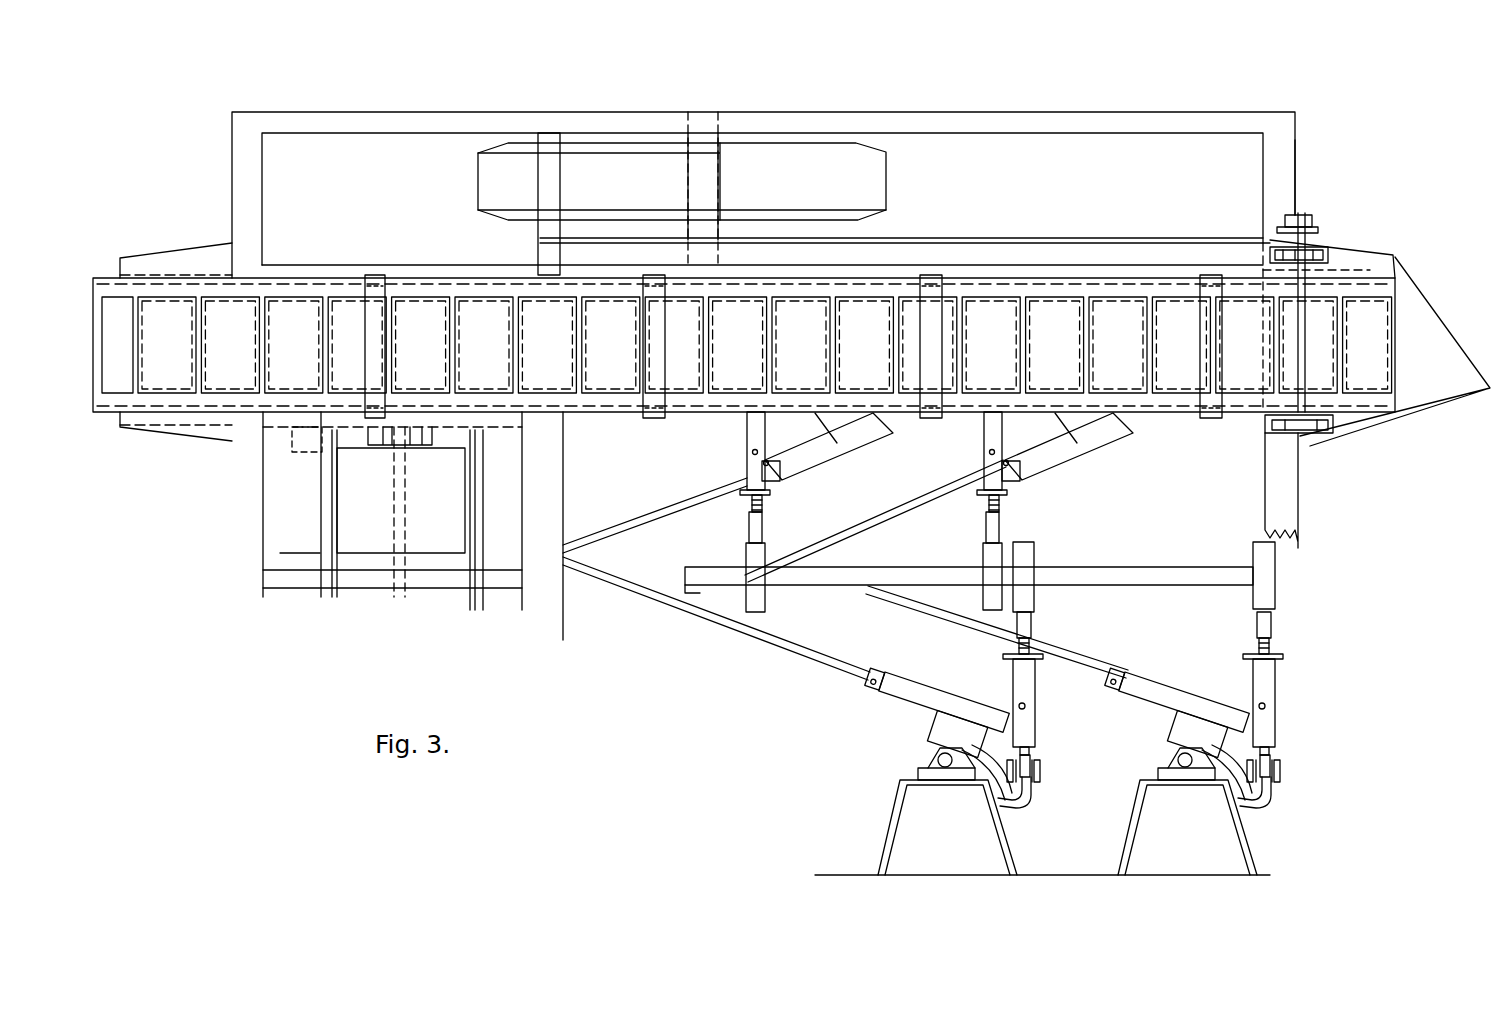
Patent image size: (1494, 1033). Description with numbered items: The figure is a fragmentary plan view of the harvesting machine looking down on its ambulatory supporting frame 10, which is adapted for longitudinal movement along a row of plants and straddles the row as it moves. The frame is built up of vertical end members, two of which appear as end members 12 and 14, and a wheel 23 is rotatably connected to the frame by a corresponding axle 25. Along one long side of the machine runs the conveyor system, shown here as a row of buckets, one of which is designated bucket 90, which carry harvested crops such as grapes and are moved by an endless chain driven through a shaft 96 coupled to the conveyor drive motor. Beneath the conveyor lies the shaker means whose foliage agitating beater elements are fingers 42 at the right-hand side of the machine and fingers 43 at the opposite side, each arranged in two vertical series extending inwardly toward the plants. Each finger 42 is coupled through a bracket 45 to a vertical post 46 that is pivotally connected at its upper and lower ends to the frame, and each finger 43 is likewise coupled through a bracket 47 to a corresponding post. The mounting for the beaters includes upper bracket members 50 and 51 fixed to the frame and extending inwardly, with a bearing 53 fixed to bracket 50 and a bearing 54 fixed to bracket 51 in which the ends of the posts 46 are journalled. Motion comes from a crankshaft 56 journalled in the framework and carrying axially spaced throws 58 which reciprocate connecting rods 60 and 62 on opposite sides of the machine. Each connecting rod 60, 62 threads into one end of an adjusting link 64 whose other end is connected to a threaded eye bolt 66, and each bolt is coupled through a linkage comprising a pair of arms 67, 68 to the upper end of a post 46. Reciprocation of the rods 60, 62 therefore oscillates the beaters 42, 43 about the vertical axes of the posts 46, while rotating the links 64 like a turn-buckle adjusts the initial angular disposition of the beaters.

The ambulatory supporting frame 10 is at (1303, 156).
The vertical end member 12 is at (1298, 122).
The vertical end member 14 is at (232, 140).
The wheel 23 is at (888, 182).
The axle 25 is at (690, 118).
The fingers 42 is at (760, 630).
The fingers 43 is at (668, 505).
The bracket 45 is at (928, 684).
The vertical post 46 is at (930, 760).
The bracket 47 is at (858, 452).
The upper bracket member 50 is at (1130, 835).
The upper bracket member 51 is at (895, 843).
The bearing 53 is at (1158, 772).
The bearing 54 is at (918, 772).
The crankshaft 56 is at (1182, 572).
The throw 58 is at (770, 605).
The connecting rod 60 is at (1278, 622).
The connecting rod 62 is at (750, 527).
The adjusting link 64 is at (1266, 683).
The threaded eye bolt 66 is at (1272, 755).
The arm 67 is at (1022, 810).
The arm 68 is at (1032, 805).
The bucket 90 is at (1368, 365).
The shaft 96 is at (1310, 240).